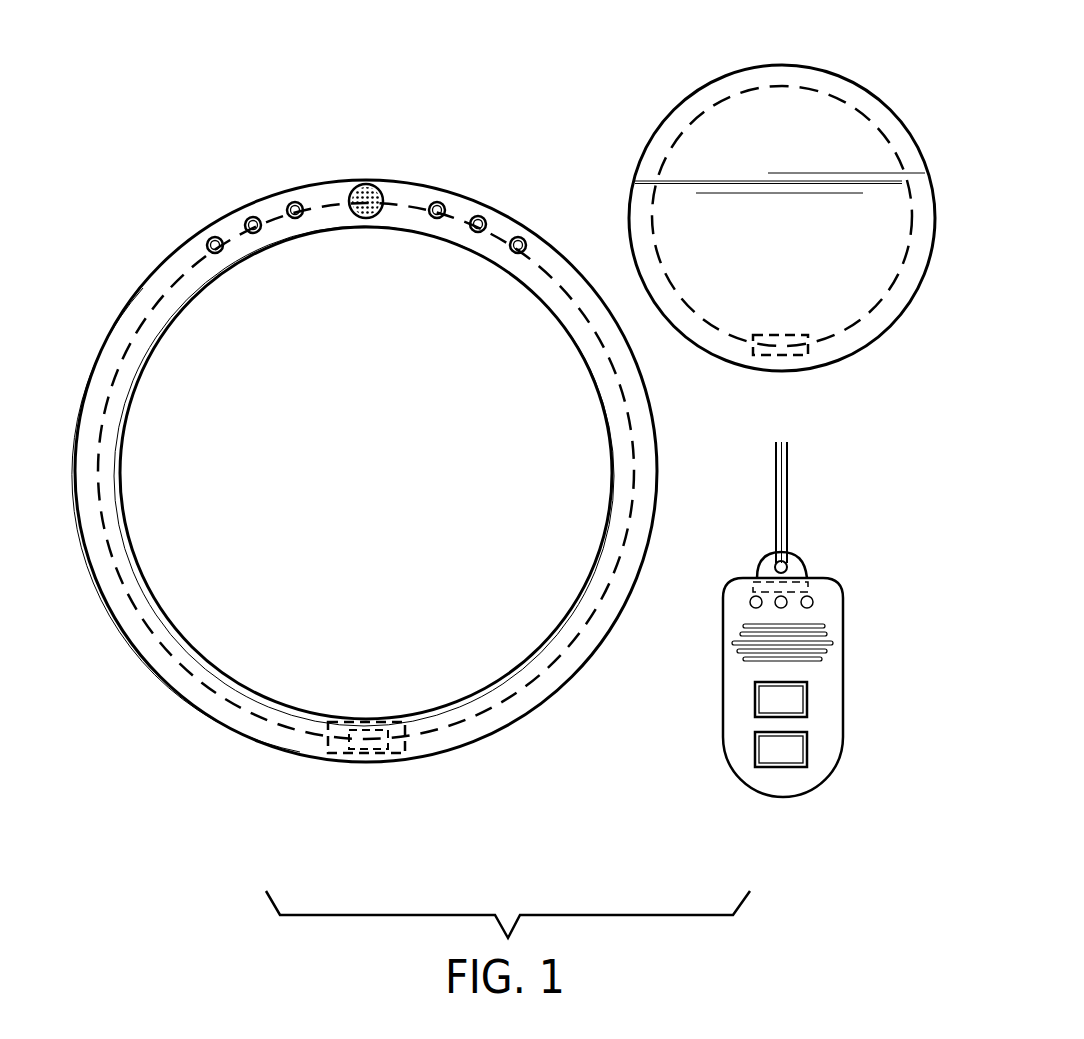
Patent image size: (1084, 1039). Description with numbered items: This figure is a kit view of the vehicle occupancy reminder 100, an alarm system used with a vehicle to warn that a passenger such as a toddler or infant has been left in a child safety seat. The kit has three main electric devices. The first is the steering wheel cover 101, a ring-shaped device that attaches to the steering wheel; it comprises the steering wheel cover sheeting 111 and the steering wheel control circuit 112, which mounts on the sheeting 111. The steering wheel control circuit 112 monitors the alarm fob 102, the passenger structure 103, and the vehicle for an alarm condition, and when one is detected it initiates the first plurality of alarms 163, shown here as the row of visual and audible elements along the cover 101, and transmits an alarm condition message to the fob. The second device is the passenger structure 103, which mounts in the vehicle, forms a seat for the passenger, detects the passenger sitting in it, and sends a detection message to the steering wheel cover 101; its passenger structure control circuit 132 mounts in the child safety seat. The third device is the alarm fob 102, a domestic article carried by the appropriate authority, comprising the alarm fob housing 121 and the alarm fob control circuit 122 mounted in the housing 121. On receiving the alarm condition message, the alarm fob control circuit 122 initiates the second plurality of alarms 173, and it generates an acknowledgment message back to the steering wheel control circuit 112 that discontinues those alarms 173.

The vehicle occupancy reminder 100 is at (182, 104).
The steering wheel cover 101 is at (175, 224).
The steering wheel cover sheeting 111 is at (122, 307).
The steering wheel control circuit 112 is at (338, 733).
The first plurality of alarms 163 is at (297, 201).
The passenger structure 103 is at (897, 315).
The passenger structure control circuit 132 is at (800, 352).
The alarm fob 102 is at (845, 630).
The second plurality of alarms 173 is at (806, 640).
The alarm fob housing 121 is at (833, 687).
The alarm fob control circuit 122 is at (807, 703).